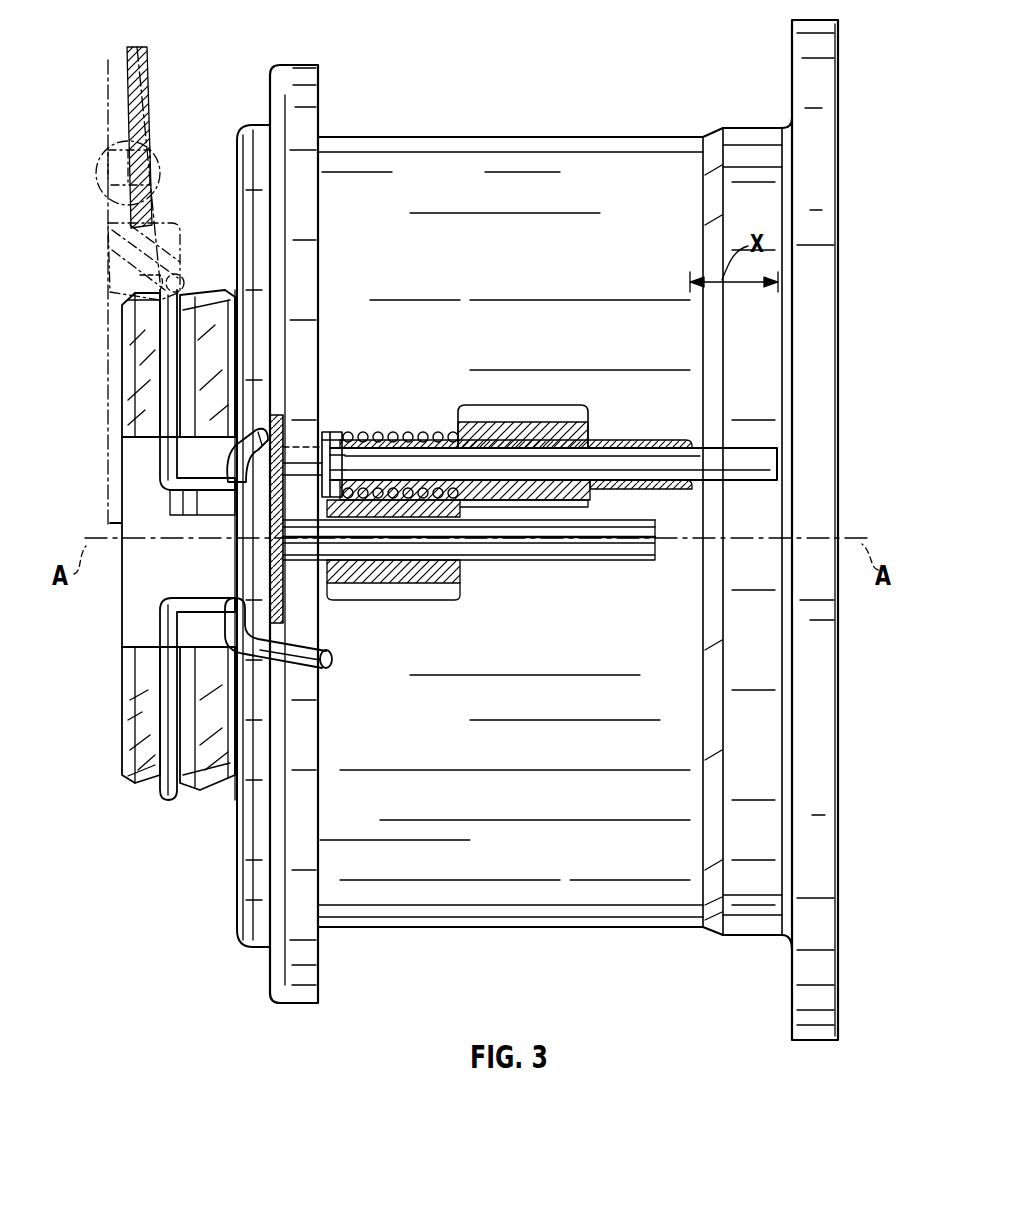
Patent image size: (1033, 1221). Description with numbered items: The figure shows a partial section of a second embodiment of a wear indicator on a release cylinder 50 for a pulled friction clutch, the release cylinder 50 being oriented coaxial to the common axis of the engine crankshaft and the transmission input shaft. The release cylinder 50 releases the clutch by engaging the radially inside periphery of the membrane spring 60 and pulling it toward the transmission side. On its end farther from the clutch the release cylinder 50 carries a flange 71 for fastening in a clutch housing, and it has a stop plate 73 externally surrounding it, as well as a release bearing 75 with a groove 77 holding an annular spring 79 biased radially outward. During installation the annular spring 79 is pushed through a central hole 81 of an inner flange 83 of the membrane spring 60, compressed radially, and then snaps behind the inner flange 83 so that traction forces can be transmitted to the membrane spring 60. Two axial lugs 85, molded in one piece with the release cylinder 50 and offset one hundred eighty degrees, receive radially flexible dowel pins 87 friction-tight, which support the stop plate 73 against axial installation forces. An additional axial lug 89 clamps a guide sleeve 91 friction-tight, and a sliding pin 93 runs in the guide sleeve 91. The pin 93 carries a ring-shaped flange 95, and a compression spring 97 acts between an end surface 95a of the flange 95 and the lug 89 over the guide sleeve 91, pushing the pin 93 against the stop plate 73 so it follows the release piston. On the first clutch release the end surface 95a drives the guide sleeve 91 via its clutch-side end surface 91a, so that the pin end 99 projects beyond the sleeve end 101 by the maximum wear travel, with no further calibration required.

The release cylinder 50 is at (590, 116).
The membrane spring 60 is at (145, 76).
The flange 71 is at (830, 183).
The stop plate 73 is at (268, 585).
The release bearing 75 is at (118, 770).
The groove 77 is at (149, 783).
The annular spring 79 is at (170, 800).
The central hole 81 is at (184, 282).
The inner flange 83 is at (112, 240).
The axial lugs 85 is at (466, 571).
The dowel pins 87 is at (600, 555).
The additional axial lug 89 is at (556, 432).
The guide sleeve 91 is at (668, 488).
The clutch-side end surface of the guide sleeve 91a is at (348, 470).
The sliding pin 93 is at (300, 452).
The ring-shaped flange 95 is at (330, 432).
The end surface of the ring-shaped flange 95a is at (339, 498).
The compression spring 97 is at (446, 440).
The pin end 99 is at (780, 462).
The end of the guide sleeve 101 is at (690, 445).